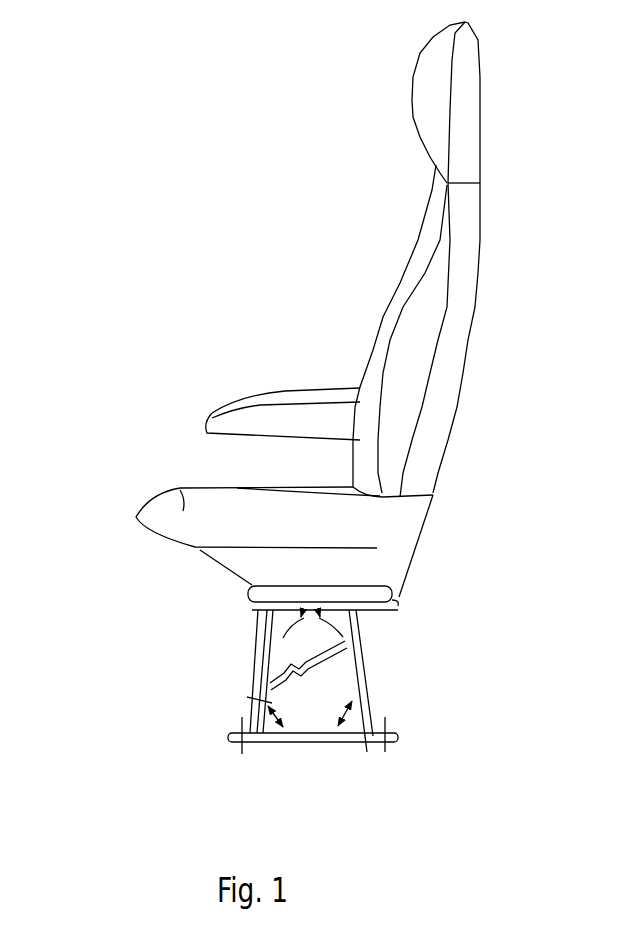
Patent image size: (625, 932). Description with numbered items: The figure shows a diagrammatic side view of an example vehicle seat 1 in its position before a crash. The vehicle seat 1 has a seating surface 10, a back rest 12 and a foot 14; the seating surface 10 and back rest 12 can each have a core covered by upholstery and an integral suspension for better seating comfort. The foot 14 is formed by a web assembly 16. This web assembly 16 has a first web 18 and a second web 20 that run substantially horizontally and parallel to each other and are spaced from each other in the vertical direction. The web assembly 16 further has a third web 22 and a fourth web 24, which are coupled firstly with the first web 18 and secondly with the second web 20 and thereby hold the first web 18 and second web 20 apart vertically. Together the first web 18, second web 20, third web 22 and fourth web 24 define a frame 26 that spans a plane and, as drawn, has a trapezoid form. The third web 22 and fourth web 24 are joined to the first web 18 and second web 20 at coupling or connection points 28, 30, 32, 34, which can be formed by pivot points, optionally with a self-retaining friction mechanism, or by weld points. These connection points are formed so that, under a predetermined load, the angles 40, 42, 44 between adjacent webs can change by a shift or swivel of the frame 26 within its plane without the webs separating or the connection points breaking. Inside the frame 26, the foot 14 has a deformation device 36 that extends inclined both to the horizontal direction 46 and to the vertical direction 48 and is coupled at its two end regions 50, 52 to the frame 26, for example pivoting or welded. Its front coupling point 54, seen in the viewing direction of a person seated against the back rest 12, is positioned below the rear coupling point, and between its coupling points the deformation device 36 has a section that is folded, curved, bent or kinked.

The vehicle seat 1 is at (185, 290).
The seating surface 10 is at (178, 488).
The back rest 12 is at (415, 282).
The foot 14 is at (110, 678).
The web assembly 16 is at (490, 690).
The first web 18 is at (247, 600).
The second web 20 is at (303, 739).
The third web 22 is at (260, 660).
The fourth web 24 is at (367, 670).
The frame 26 is at (313, 604).
The coupling or connection point 28 is at (262, 611).
The coupling or connection point 30 is at (357, 621).
The coupling or connection point 32 is at (249, 728).
The coupling or connection point 34 is at (392, 737).
The deformation device 36 is at (283, 638).
The angle 40 is at (343, 636).
The angle 42 is at (256, 751).
The angle 44 is at (367, 752).
The horizontal direction 46 is at (335, 797).
The vertical direction 48 is at (470, 621).
The end region 50 is at (250, 696).
The end region 52 is at (370, 649).
The front coupling point 54 is at (247, 697).